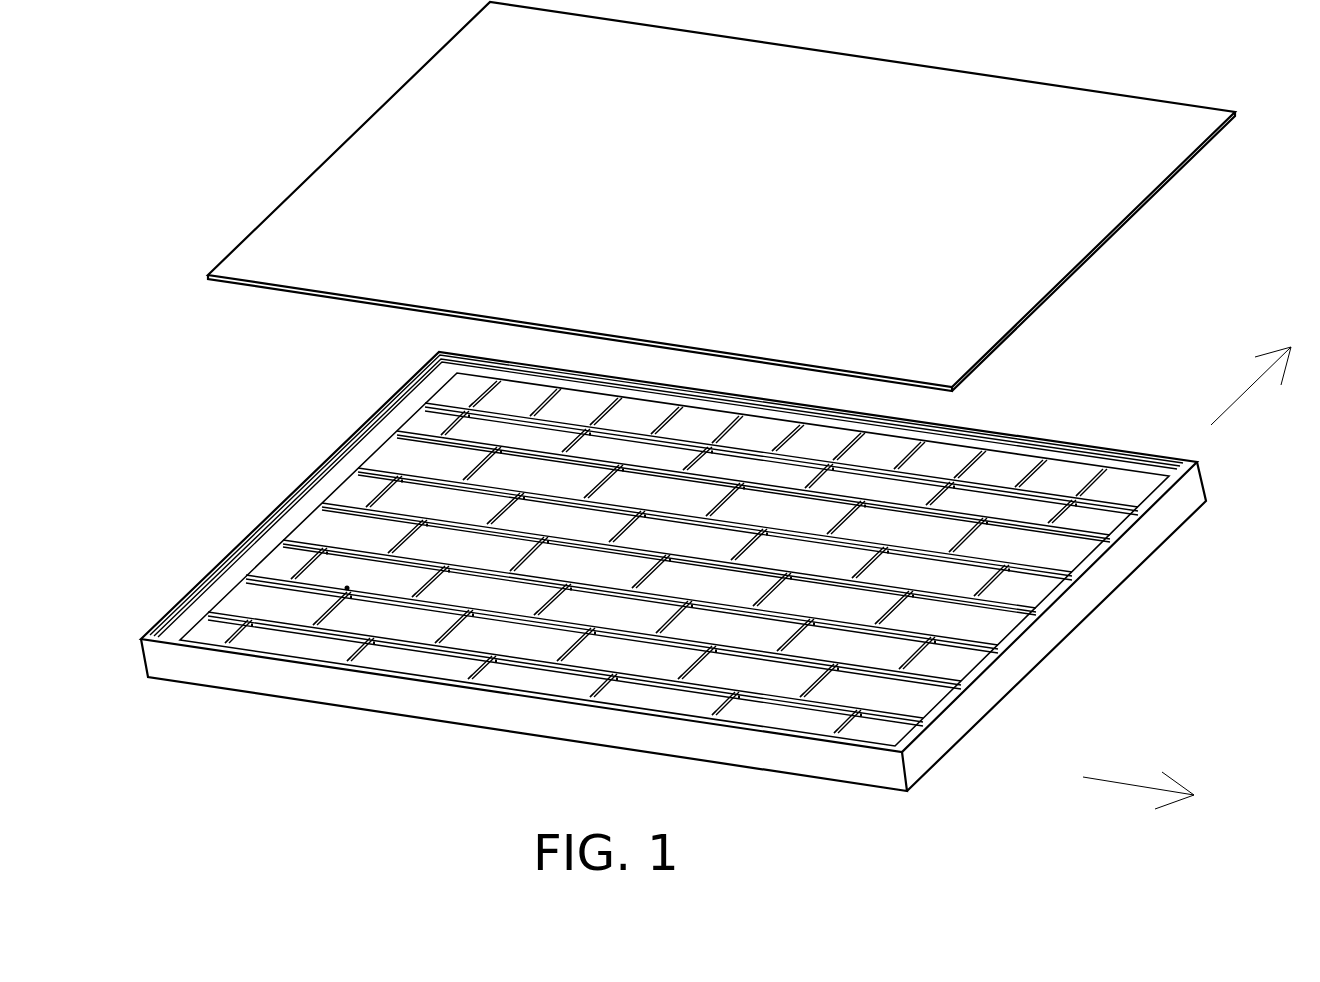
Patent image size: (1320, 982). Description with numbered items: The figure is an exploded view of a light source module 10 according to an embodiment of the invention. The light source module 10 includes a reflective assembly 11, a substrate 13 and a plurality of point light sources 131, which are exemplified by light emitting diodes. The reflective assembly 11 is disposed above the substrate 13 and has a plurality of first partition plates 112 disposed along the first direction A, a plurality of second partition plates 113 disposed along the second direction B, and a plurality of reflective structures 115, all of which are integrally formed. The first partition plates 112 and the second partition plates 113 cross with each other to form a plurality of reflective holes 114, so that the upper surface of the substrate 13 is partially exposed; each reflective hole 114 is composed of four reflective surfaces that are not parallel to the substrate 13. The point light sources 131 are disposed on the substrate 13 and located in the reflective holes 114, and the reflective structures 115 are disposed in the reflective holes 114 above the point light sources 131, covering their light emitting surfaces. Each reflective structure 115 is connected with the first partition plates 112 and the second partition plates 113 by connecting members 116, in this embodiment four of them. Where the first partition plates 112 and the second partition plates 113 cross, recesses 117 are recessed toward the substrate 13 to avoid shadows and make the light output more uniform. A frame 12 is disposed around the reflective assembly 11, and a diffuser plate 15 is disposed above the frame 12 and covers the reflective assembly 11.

The light source module 10 is at (92, 104).
The reflective assembly 11 is at (695, 576).
The frame 12 is at (190, 668).
The substrate 13 is at (638, 621).
The diffuser plate 15 is at (1013, 222).
The first partition plates 112 is at (308, 665).
The second partition plates 113 is at (427, 605).
The reflective holes 114 is at (398, 398).
The reflective structures 115 is at (423, 403).
The connecting members 116 is at (410, 378).
The recesses 117 is at (347, 588).
The point light sources 131 is at (467, 420).